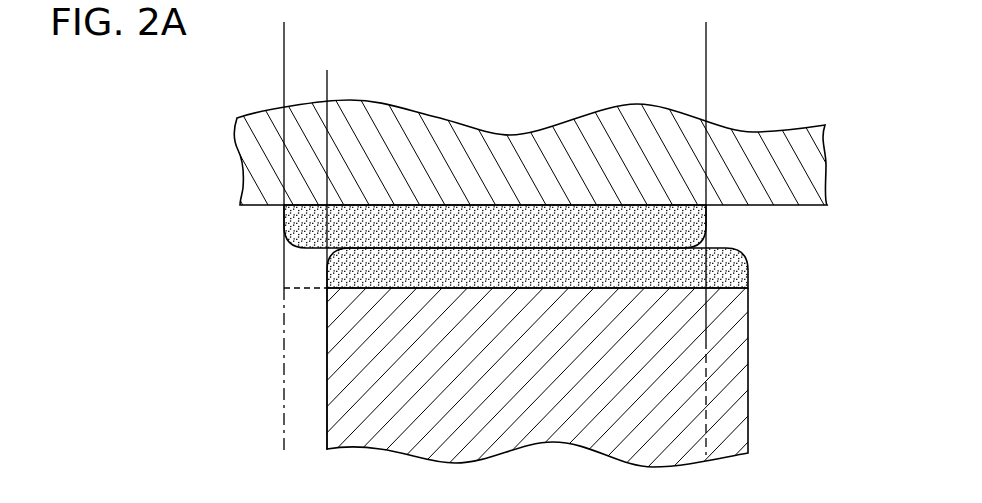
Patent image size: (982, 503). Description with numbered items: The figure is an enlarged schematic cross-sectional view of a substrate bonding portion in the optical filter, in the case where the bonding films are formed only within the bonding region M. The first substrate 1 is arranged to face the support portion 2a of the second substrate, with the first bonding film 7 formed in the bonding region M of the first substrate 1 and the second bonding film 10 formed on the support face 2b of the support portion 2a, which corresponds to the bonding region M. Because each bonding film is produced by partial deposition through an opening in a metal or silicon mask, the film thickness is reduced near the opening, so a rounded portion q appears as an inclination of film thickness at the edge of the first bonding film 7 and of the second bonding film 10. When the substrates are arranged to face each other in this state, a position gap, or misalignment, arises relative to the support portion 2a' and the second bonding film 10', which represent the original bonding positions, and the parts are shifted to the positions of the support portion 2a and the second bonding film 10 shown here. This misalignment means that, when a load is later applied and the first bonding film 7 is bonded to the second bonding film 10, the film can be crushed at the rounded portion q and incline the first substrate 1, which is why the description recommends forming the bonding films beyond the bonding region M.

The first substrate 1 is at (786, 156).
The support portion 2a is at (530, 379).
The support face 2b is at (597, 288).
The first bonding film 7 is at (707, 215).
The second bonding film 10 is at (594, 294).
The second bonding film (original bonding position) 10' is at (253, 286).
The support portion (original bonding position) 2a' is at (241, 369).
The rounded portion q is at (325, 275).
The bonding region M is at (706, 33).